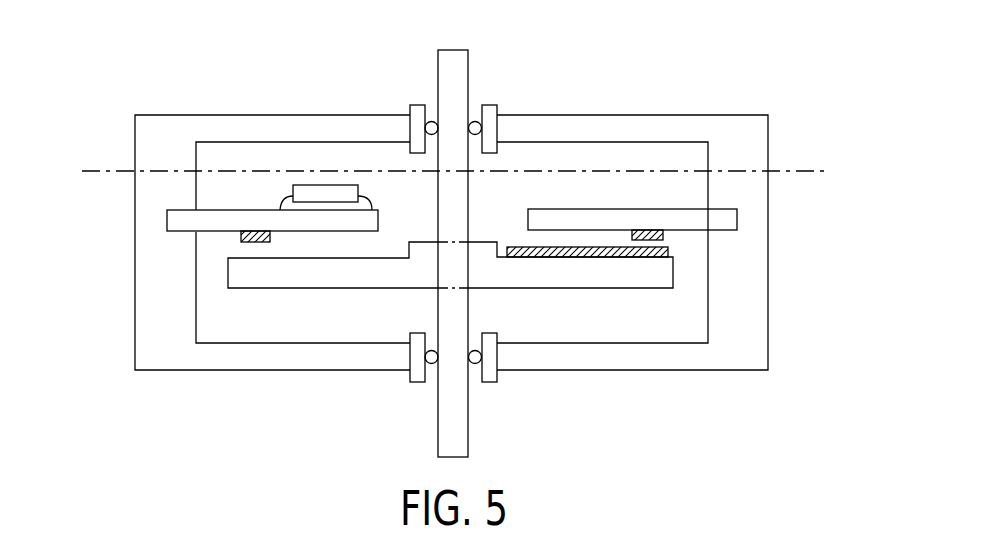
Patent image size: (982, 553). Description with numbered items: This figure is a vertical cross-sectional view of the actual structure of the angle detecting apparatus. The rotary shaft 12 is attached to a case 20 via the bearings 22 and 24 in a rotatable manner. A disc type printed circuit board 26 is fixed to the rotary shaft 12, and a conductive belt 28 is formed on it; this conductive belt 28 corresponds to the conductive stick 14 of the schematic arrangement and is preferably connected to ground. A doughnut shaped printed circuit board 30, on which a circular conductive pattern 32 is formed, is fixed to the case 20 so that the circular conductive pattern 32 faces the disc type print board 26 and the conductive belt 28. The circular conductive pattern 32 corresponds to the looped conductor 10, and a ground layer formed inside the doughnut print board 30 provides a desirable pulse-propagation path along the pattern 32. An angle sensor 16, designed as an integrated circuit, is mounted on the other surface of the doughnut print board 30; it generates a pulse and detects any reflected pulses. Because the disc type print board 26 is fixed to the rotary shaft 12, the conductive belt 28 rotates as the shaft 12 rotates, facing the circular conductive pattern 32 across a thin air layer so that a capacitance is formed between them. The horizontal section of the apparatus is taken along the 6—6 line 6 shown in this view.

The 6—6 line 6 is at (448, 172).
The looped conductor 10 is at (234, 237).
The rotary shaft 12 is at (460, 48).
The conductive stick 14 is at (652, 250).
The angle sensor 16 is at (290, 190).
The case 20 is at (753, 278).
The bearing 22 is at (475, 120).
The bearing 24 is at (477, 375).
The disc type printed circuit board 26 is at (582, 280).
The conductive belt 28 is at (607, 288).
The doughnut shaped printed circuit board 30 is at (372, 222).
The circular conductive pattern 32 is at (505, 263).